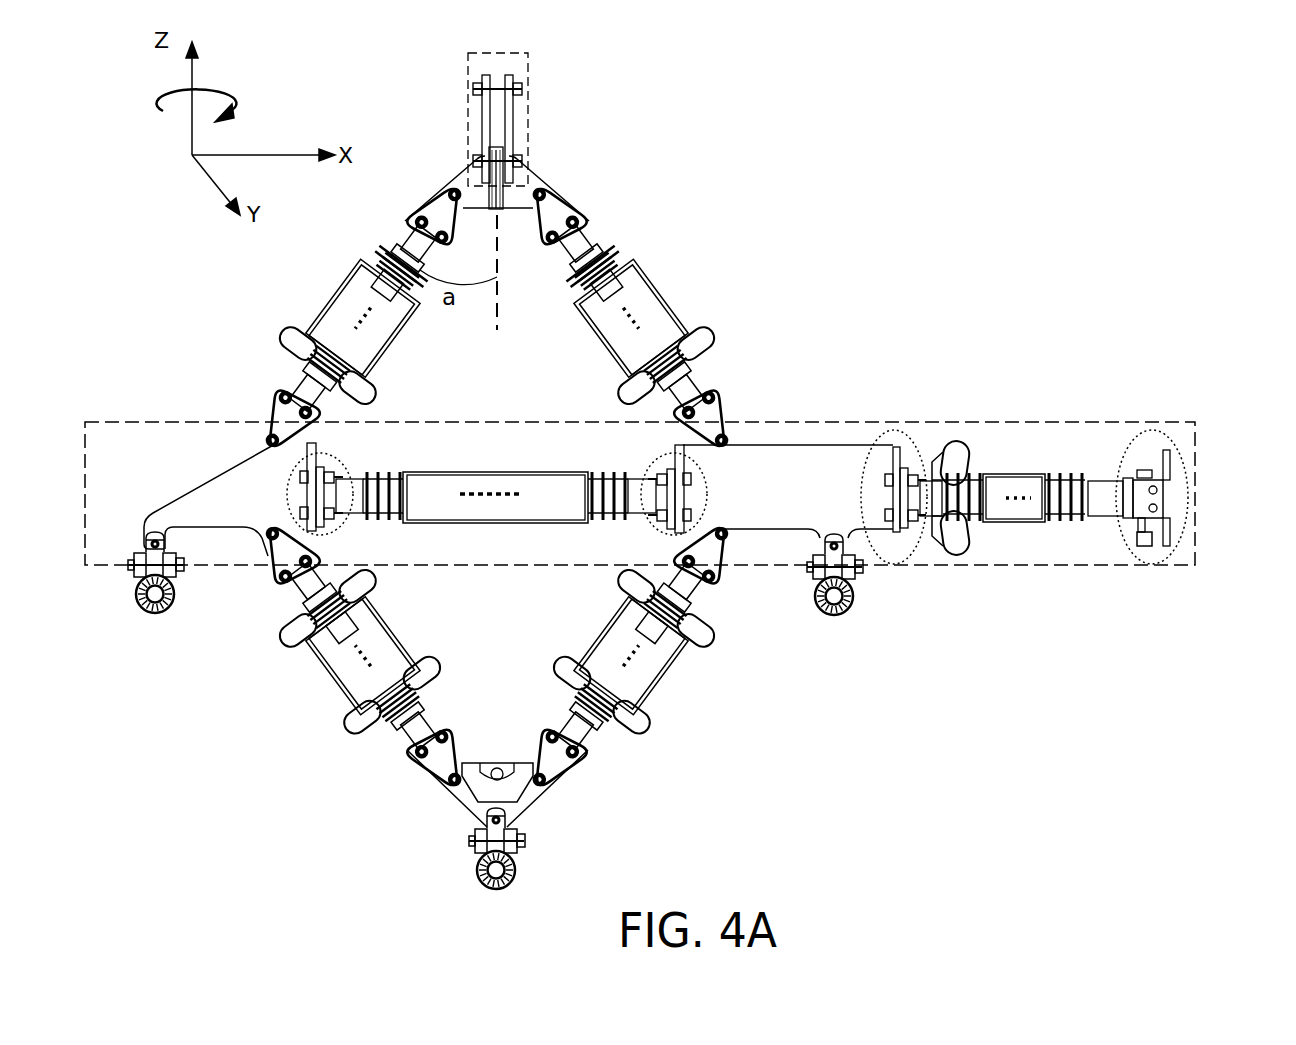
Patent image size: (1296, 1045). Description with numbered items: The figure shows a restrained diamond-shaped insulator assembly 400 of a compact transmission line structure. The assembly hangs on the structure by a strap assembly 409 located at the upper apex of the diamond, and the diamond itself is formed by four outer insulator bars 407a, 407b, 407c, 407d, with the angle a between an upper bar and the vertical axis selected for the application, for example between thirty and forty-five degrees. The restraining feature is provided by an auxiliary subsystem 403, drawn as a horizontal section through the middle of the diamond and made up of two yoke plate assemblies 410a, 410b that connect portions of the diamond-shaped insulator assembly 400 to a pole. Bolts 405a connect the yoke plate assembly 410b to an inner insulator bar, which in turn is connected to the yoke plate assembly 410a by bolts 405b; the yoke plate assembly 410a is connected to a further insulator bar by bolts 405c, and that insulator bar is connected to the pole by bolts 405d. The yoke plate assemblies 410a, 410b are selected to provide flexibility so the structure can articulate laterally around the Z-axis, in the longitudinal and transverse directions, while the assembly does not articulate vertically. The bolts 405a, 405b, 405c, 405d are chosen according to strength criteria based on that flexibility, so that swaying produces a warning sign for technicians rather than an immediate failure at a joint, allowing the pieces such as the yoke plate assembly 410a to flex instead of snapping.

The restrained diamond-shaped insulator assembly 400 is at (1202, 62).
The auxiliary subsystem 403 is at (1057, 422).
The bolts 405a is at (286, 482).
The bolts 405b is at (706, 500).
The bolts 405c is at (905, 565).
The bolts 405d is at (1160, 565).
The insulator bar 407a is at (347, 285).
The insulator bar 407b is at (338, 683).
The insulator bar 407c is at (595, 638).
The insulator bar 407d is at (653, 293).
The strap assembly 409 is at (527, 113).
The yoke plate assembly 410a is at (853, 445).
The yoke plate assembly 410b is at (183, 490).